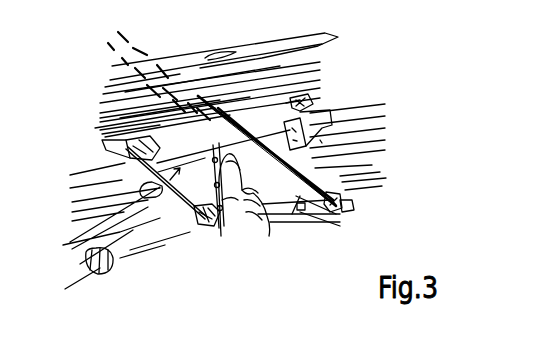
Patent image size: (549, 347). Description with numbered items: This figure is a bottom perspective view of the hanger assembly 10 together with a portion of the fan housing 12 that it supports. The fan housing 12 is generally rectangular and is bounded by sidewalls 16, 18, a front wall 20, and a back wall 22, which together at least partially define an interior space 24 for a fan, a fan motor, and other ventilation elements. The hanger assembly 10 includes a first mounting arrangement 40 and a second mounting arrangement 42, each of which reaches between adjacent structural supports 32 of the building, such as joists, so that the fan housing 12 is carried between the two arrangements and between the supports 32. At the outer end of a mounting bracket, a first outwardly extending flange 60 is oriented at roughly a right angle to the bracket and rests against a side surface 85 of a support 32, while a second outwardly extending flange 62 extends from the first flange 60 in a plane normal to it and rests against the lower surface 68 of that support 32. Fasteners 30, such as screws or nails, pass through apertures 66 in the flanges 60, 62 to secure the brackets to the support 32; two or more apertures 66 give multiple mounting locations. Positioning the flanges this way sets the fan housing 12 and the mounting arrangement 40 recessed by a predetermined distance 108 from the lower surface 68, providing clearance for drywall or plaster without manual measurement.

The hanger assembly 10 is at (371, 39).
The fan housing 12 is at (324, 119).
The sidewall 16 is at (132, 152).
The sidewall 18 is at (310, 115).
The front wall 20 is at (100, 119).
The back wall 22 is at (255, 195).
The interior space 24 is at (102, 202).
The fastener 30 is at (196, 222).
The structural support 32 is at (226, 56).
The first mounting arrangement 40 is at (300, 217).
The second mounting arrangement 42 is at (210, 243).
The first outwardly extending flange 60 is at (345, 152).
The second outwardly extending flange 62 is at (328, 210).
The aperture 66 is at (340, 210).
The lower surface 68 is at (303, 100).
The side surface 85 is at (366, 174).
The predetermined distance 108 is at (152, 12).